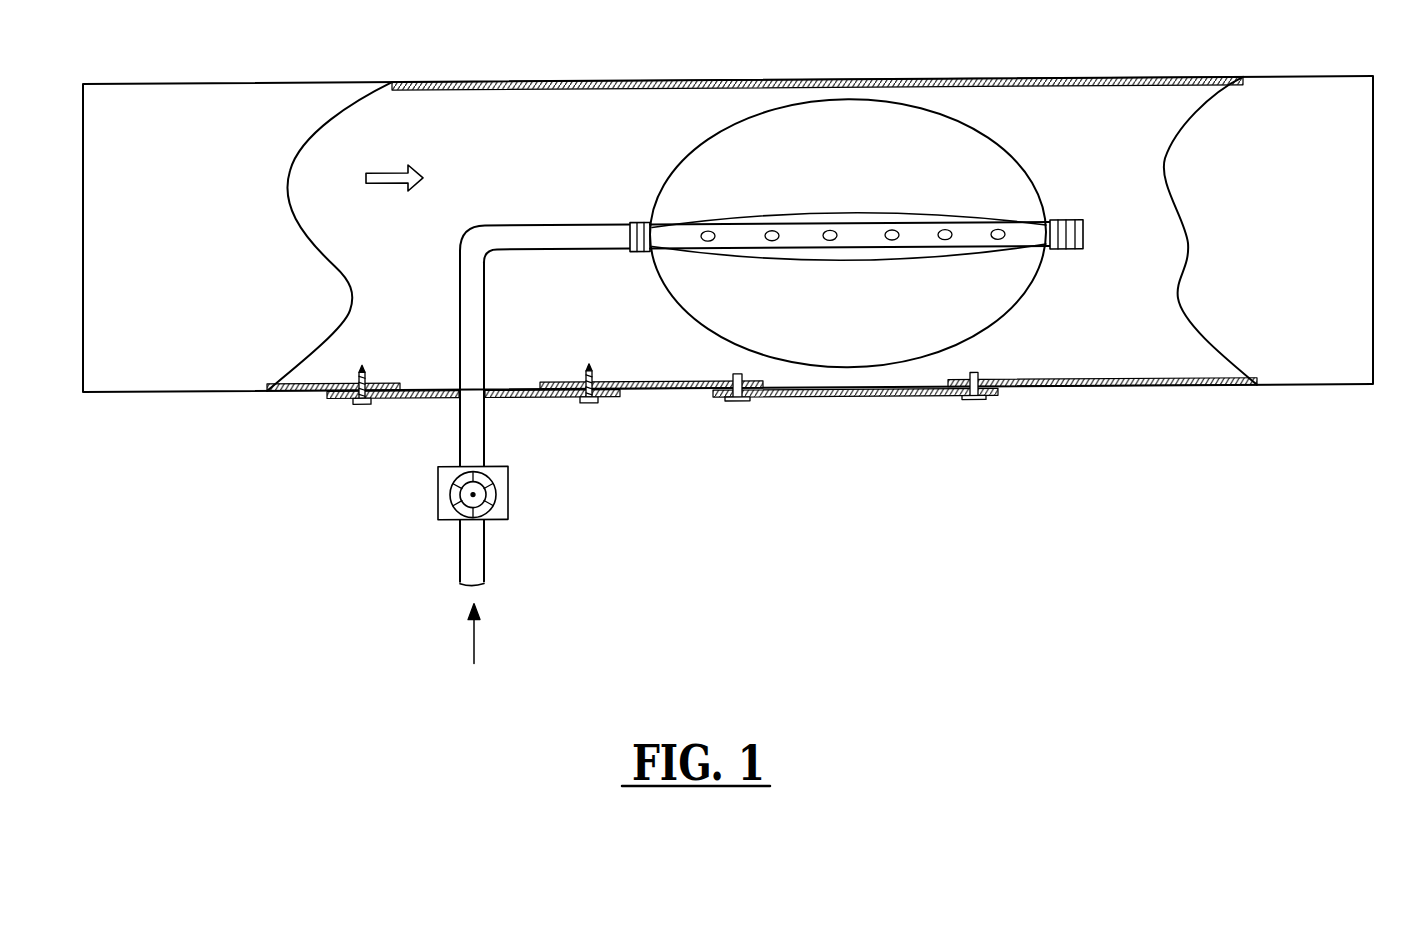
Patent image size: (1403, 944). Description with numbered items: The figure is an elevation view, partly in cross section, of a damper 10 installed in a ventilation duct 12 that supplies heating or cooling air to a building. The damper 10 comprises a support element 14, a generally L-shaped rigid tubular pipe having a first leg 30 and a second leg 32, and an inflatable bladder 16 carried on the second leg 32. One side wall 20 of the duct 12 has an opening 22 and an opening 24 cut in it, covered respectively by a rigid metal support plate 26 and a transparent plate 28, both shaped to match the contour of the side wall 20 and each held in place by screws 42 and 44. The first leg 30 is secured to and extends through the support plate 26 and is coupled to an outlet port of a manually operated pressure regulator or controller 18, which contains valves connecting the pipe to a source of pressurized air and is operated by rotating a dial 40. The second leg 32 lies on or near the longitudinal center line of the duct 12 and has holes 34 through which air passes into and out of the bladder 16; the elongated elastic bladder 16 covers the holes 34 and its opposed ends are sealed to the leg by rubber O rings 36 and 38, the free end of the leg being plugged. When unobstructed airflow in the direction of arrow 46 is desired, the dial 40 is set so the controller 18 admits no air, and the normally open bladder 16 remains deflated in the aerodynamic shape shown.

The damper 10 is at (603, 140).
The ventilation duct 12 is at (947, 82).
The support element 14 is at (725, 375).
The inflatable bladder 16 is at (748, 216).
The controller 18 is at (457, 513).
The side wall 20 is at (275, 395).
The opening 22 is at (400, 385).
The opening 24 is at (797, 405).
The support plate 26 is at (530, 402).
The transparent plate 28 is at (865, 402).
The first leg 30 is at (459, 303).
The second leg 32 is at (540, 228).
The holes 34 is at (1017, 255).
The O ring 36 is at (640, 256).
The O ring 38 is at (1062, 227).
The dial 40 is at (490, 504).
The screws 42 is at (360, 408).
The screws 44 is at (977, 406).
The arrow 46 is at (385, 167).